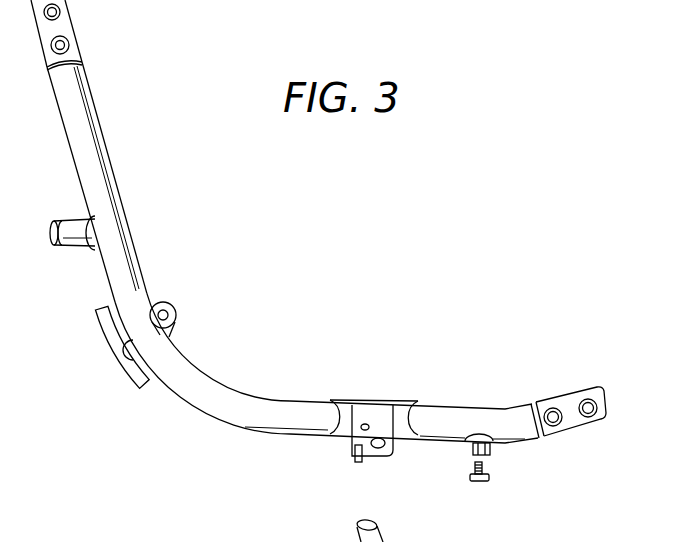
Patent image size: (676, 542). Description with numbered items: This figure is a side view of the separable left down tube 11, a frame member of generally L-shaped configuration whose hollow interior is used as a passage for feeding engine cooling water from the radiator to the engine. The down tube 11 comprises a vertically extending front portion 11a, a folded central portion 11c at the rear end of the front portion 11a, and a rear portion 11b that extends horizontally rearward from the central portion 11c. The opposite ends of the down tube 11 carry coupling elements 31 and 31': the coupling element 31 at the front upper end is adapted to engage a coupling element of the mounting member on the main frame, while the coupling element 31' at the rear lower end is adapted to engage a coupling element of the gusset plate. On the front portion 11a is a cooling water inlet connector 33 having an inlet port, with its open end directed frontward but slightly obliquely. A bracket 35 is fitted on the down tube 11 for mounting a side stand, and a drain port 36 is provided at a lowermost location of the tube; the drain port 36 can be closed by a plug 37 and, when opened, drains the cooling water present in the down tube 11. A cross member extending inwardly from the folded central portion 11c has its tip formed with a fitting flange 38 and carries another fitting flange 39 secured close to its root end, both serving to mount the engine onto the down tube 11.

The left down tube 11 is at (295, 263).
The front portion 11a is at (118, 237).
The rear portion 11b is at (455, 417).
The central portion 11c is at (170, 386).
The coupling element 31 is at (78, 35).
The coupling element 31' is at (571, 437).
The cooling water inlet connector 33 is at (75, 243).
The bracket 35 is at (377, 412).
The drain port 36 is at (470, 450).
The plug 37 is at (484, 483).
The fitting flange 38 is at (137, 378).
The fitting flange 39 is at (176, 315).